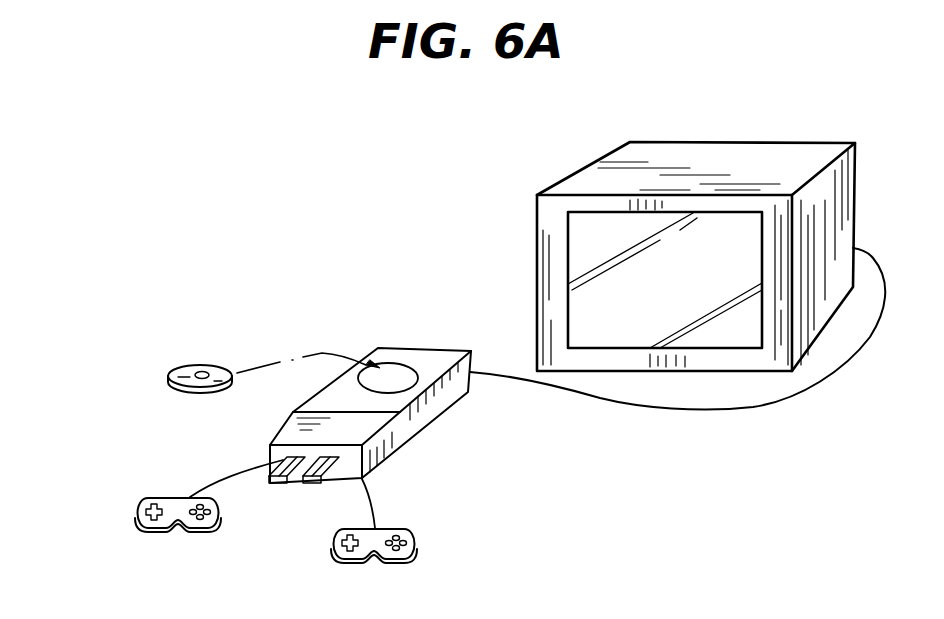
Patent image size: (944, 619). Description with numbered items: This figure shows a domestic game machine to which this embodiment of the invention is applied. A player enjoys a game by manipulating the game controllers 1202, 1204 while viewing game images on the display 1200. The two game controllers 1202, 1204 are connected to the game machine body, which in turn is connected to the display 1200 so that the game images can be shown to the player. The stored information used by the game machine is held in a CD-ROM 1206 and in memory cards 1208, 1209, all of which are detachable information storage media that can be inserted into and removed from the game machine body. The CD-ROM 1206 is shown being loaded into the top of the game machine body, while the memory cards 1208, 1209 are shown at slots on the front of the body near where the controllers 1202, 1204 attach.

The display 1200 is at (603, 287).
The game controller 1202 is at (133, 522).
The game controller 1204 is at (447, 530).
The CD-ROM 1206 is at (193, 366).
The memory card 1208 is at (283, 458).
The memory card 1209 is at (313, 486).